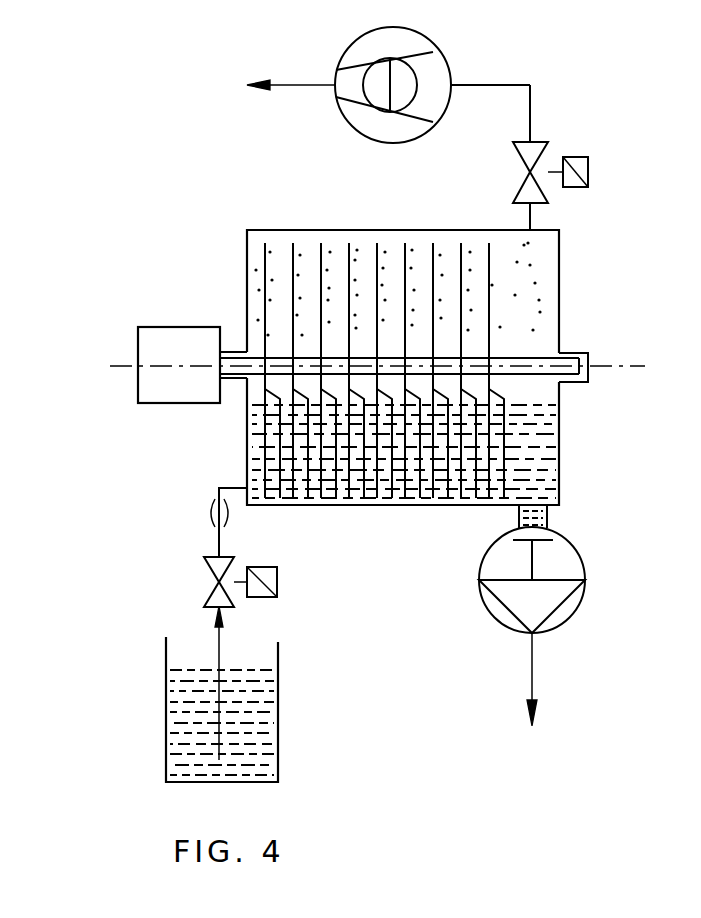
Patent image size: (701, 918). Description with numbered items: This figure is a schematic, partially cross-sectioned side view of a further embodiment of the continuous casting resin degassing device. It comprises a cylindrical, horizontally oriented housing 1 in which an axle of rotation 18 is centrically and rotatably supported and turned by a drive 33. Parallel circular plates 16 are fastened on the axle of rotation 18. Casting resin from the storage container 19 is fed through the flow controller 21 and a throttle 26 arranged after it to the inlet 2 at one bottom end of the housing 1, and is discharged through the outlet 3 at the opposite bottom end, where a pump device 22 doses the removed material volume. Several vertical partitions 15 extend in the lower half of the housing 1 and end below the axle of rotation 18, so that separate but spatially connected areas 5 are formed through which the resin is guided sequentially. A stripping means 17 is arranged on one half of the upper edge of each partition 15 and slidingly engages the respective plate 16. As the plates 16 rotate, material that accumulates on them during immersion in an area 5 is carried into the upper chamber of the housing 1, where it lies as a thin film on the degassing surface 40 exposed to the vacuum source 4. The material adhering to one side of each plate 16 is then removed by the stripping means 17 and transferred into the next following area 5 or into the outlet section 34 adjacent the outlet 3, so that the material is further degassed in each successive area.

The housing 1 is at (563, 292).
The inlet 2 is at (233, 486).
The outlet 3 is at (547, 512).
The vacuum source 4 is at (343, 118).
The areas 5 is at (318, 505).
The vertical partitions 15 is at (522, 441).
The circular plates 16 is at (255, 256).
The stripping means 17 is at (502, 394).
The axle of rotation 18 is at (528, 364).
The storage container 19 is at (185, 717).
The flow controller 21 is at (215, 592).
The pump device 22 is at (580, 601).
The throttle 26 is at (228, 512).
The drive 33 is at (146, 383).
The outlet section 34 is at (550, 457).
The degassing surface 40 is at (478, 277).